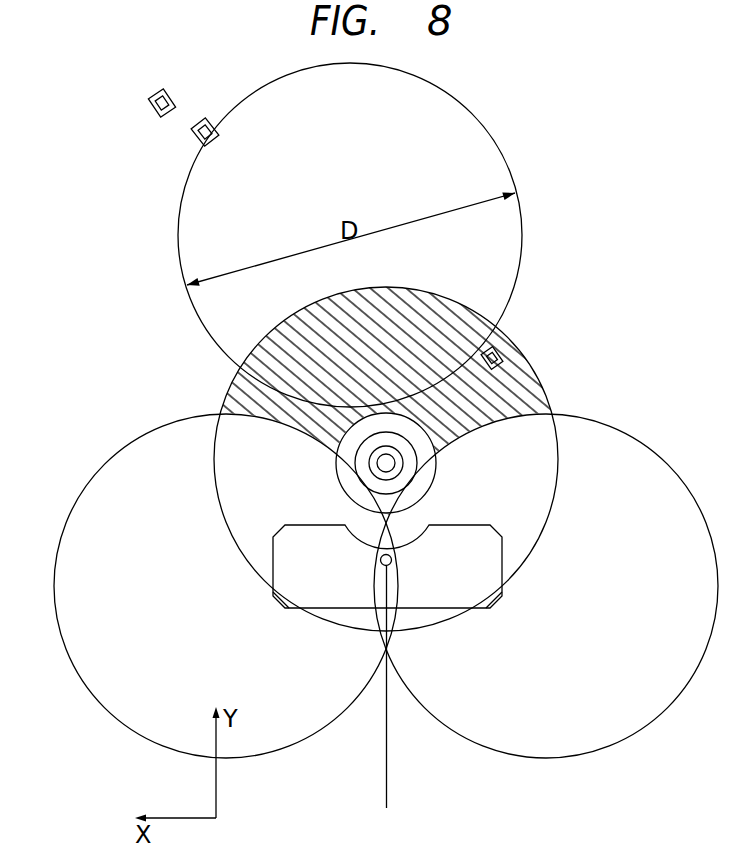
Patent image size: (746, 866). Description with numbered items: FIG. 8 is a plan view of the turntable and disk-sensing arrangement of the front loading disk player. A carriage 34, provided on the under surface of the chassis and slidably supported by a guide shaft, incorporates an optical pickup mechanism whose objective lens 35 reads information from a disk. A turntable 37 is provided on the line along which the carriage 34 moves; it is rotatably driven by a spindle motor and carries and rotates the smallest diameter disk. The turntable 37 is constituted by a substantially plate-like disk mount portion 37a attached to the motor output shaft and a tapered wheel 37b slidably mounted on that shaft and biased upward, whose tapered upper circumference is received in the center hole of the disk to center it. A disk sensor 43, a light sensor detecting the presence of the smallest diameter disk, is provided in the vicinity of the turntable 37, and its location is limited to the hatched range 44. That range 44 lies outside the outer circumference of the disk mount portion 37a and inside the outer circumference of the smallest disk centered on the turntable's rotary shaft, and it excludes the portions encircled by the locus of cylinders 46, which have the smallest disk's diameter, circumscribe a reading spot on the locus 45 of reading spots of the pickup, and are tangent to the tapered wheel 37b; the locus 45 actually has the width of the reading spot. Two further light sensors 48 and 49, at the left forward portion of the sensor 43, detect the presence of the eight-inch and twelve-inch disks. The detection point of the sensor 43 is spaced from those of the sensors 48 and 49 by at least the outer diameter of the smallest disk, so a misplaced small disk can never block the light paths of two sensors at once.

The carriage 34 is at (502, 548).
The objective lens 35 is at (392, 562).
The turntable 37 is at (390, 465).
The disk mount portion 37a is at (337, 465).
The tapered wheel 37b is at (362, 478).
The disk sensor 43 is at (497, 351).
The hatched range 44 is at (539, 389).
The locus of reading spots 45 is at (389, 775).
The locus of cylinders 46 is at (291, 746).
The sensor 48 is at (214, 121).
The sensor 49 is at (170, 93).